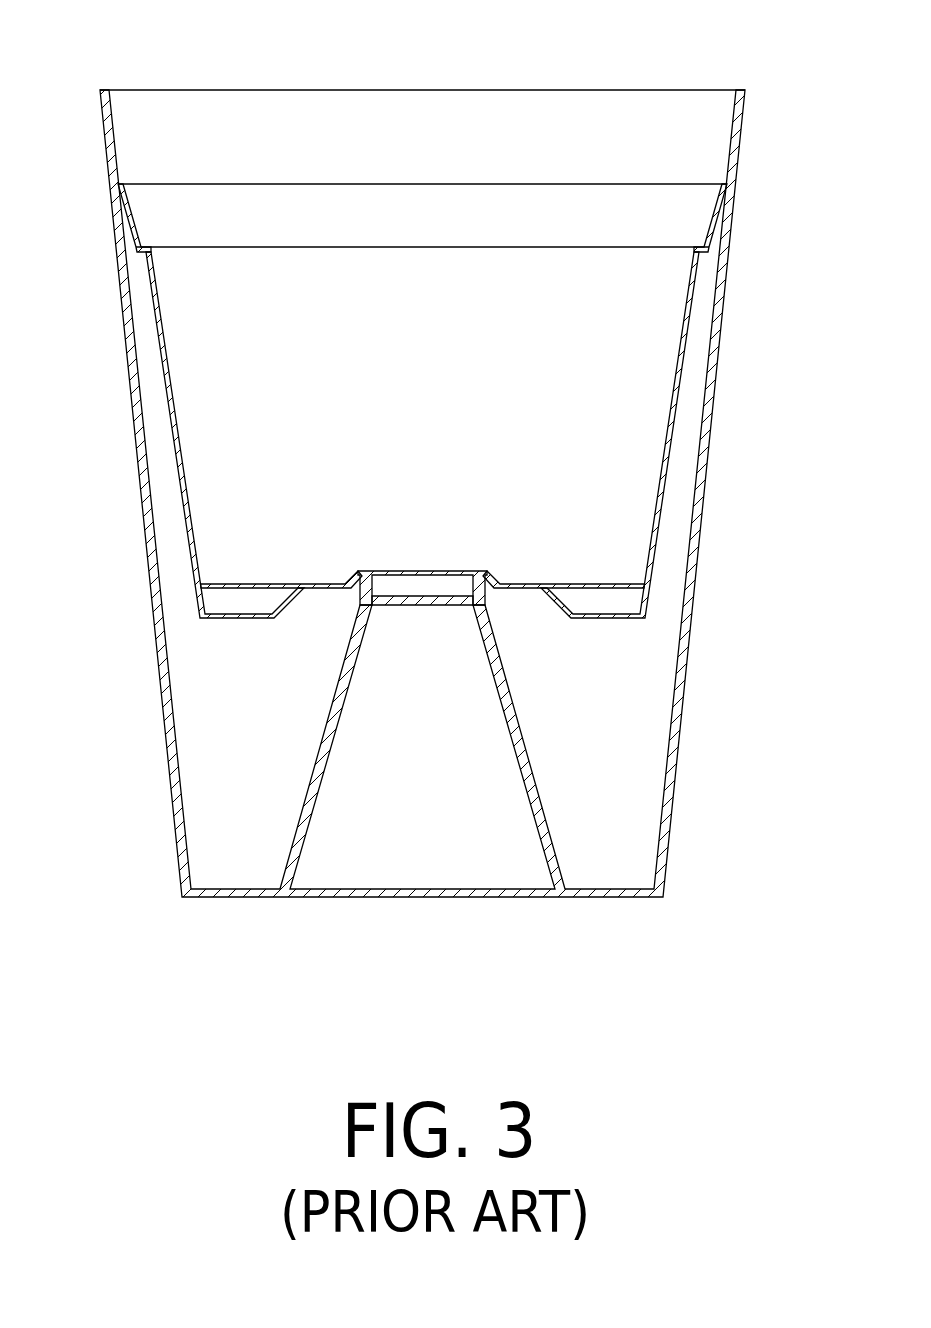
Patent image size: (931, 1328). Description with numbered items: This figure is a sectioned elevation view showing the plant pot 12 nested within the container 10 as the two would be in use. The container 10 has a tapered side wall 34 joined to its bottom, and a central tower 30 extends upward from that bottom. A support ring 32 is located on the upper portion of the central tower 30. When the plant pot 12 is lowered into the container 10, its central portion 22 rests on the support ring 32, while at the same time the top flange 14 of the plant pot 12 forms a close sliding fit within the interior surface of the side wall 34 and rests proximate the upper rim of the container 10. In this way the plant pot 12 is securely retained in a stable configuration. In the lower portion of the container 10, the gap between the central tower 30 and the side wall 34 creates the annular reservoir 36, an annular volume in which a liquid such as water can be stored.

The container 10 is at (550, 90).
The plant pot 12 is at (403, 184).
The top flange 14 is at (100, 90).
The central portion 22 is at (450, 571).
The central tower 30 is at (515, 722).
The support ring 32 is at (488, 577).
The tapered side wall 34 is at (127, 363).
The annular reservoir 36 is at (593, 775).